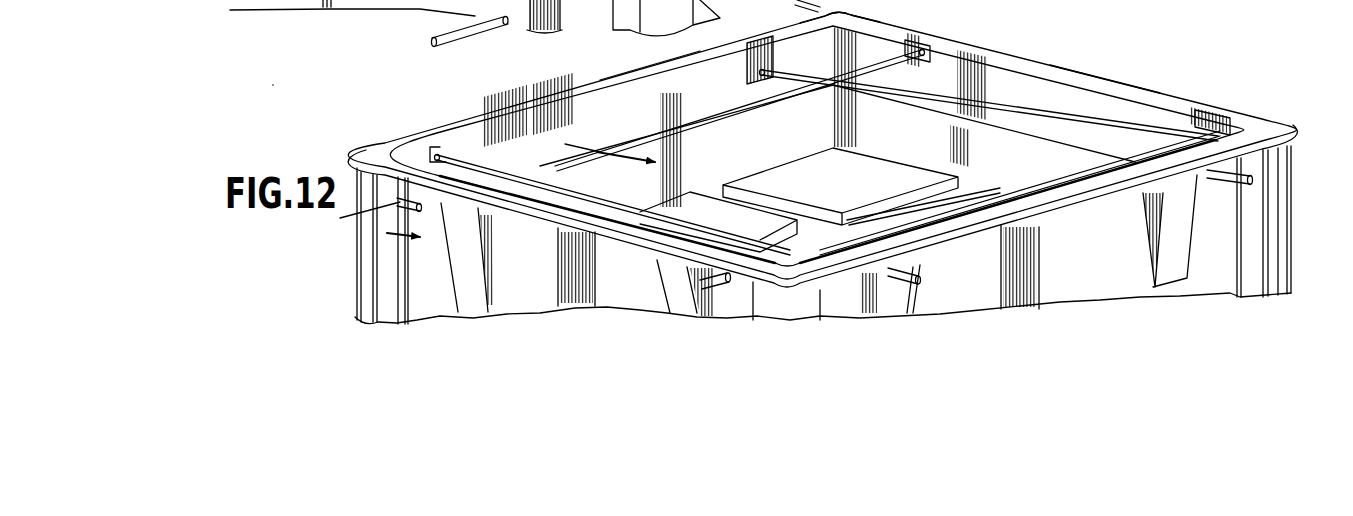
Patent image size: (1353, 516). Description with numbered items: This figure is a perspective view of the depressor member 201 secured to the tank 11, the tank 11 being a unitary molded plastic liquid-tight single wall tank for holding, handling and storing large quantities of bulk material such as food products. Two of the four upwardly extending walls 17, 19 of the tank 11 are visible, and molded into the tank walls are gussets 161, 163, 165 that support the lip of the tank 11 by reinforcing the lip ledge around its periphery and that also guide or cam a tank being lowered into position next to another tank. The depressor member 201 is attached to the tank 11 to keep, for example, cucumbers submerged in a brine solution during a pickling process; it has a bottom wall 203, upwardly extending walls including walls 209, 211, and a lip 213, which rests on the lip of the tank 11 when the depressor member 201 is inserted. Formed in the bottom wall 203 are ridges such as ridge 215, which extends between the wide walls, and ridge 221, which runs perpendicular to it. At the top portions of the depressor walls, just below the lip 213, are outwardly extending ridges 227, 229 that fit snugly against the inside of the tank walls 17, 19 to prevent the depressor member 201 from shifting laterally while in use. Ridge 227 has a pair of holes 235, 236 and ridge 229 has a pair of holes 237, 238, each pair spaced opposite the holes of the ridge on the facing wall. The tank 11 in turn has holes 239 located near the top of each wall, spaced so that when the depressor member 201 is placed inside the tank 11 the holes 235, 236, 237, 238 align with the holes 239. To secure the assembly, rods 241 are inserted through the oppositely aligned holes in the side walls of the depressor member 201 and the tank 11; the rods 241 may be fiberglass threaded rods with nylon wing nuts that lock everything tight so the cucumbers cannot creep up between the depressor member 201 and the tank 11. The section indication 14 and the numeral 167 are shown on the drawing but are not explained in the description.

The tank 11 is at (350, 247).
The section line 14- 14 is at (497, 190).
The wall 17 is at (627, 288).
The wall 19 is at (1213, 245).
The gusset 161 is at (463, 242).
The gusset 163 is at (688, 282).
The gusset 165 is at (927, 288).
The inner leg 167 is at (1166, 226).
The depressor member 201 is at (1010, 40).
The bottom wall 203 is at (800, 193).
The wall 209 is at (1022, 113).
The wall 211 is at (549, 143).
The lip 213 is at (857, 20).
The ridge 215 is at (923, 197).
The ridge 221 is at (720, 194).
The ridge 227 is at (1102, 97).
The ridge 229 is at (652, 78).
The hole 235 is at (922, 48).
The hole 236 is at (1193, 112).
The hole 237 is at (436, 150).
The hole 238 is at (758, 63).
The holes 239 is at (292, 0).
The rods 241 is at (853, 55).